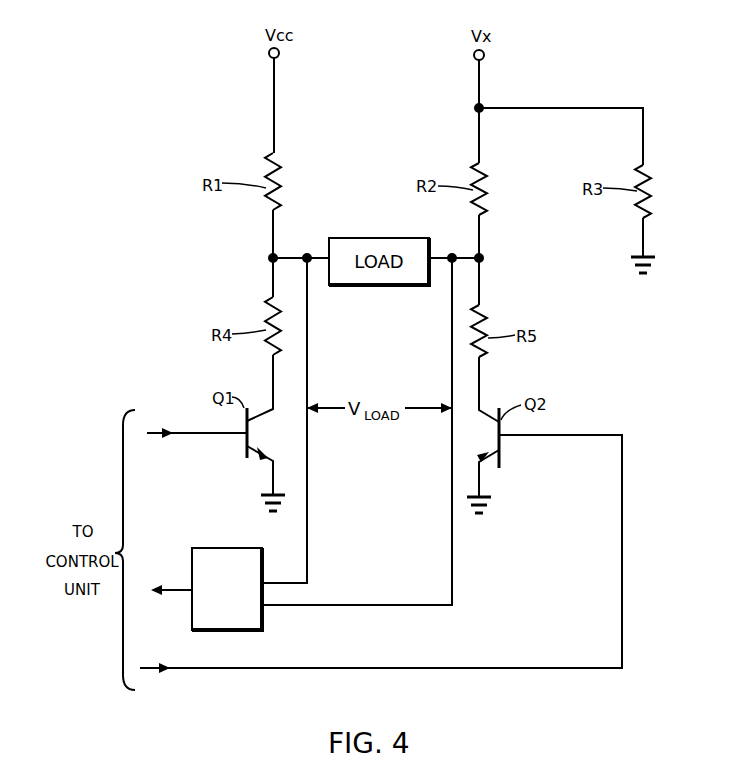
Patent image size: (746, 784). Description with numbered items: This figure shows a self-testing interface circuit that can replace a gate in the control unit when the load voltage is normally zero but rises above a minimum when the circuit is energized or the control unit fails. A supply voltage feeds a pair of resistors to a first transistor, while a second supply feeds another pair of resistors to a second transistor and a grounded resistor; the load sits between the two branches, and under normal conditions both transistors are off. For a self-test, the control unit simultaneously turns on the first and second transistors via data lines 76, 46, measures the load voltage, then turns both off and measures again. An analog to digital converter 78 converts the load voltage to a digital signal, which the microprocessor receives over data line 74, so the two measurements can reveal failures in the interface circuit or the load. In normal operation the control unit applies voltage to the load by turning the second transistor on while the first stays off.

The data line 46 is at (233, 668).
The data line 74 is at (172, 590).
The data line 76 is at (197, 433).
The analog to digital converter 78 is at (252, 630).